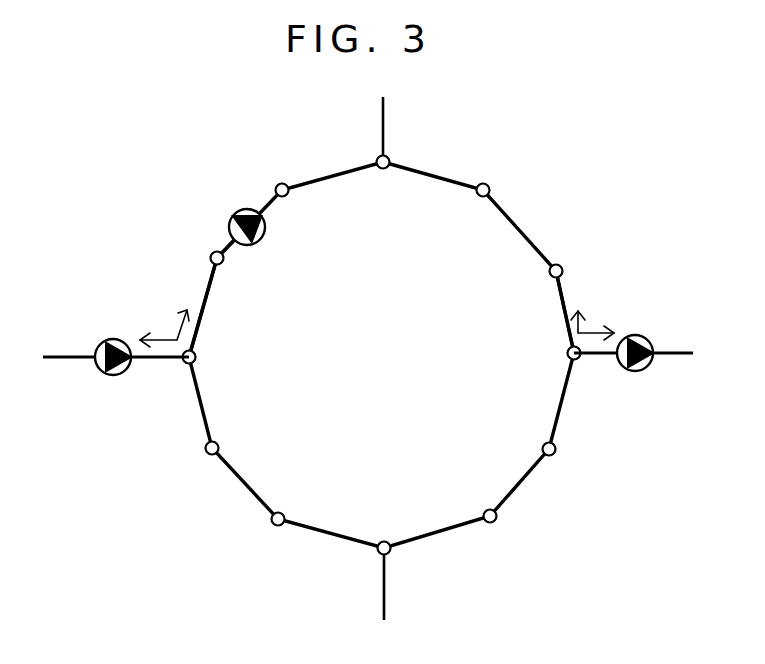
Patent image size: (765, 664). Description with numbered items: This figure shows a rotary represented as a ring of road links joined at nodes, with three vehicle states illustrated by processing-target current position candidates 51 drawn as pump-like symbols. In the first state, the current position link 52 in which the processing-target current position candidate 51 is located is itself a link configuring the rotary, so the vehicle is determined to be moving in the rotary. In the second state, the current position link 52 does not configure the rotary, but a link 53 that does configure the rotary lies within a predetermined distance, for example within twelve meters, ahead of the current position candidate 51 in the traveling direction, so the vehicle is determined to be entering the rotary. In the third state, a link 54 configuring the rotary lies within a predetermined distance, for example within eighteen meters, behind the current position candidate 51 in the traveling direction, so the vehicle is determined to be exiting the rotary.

The processing-target current position candidate 51 is at (245, 208).
The current position link 52 is at (227, 243).
The link configuring the rotary 53 is at (207, 283).
The link configuring the rotary 54 is at (565, 290).